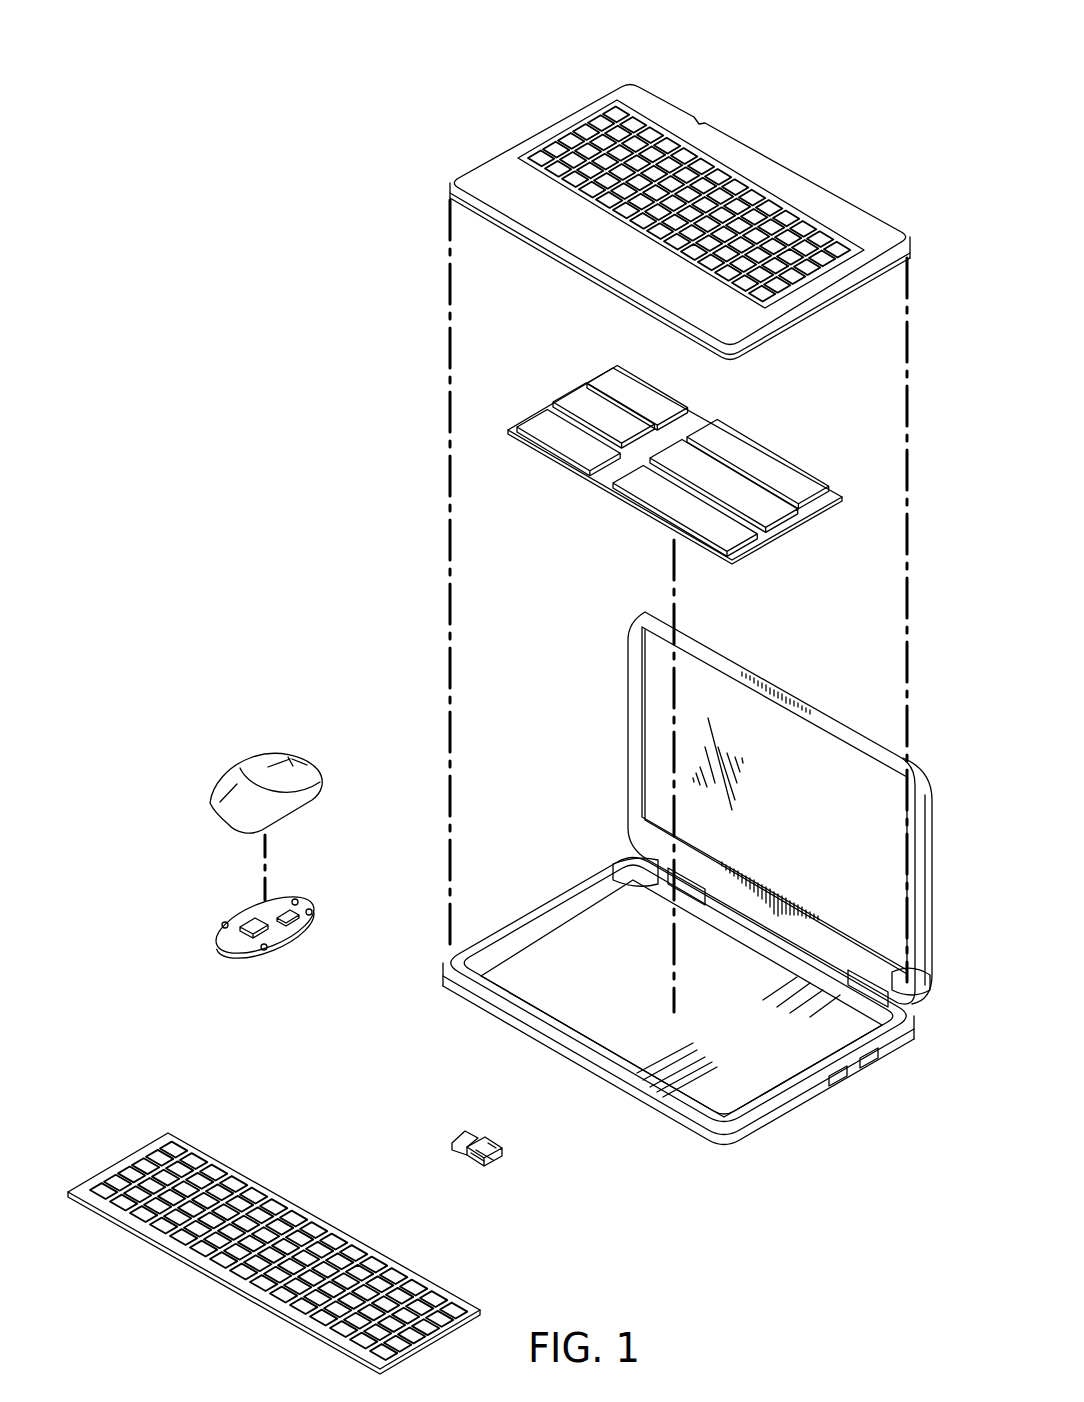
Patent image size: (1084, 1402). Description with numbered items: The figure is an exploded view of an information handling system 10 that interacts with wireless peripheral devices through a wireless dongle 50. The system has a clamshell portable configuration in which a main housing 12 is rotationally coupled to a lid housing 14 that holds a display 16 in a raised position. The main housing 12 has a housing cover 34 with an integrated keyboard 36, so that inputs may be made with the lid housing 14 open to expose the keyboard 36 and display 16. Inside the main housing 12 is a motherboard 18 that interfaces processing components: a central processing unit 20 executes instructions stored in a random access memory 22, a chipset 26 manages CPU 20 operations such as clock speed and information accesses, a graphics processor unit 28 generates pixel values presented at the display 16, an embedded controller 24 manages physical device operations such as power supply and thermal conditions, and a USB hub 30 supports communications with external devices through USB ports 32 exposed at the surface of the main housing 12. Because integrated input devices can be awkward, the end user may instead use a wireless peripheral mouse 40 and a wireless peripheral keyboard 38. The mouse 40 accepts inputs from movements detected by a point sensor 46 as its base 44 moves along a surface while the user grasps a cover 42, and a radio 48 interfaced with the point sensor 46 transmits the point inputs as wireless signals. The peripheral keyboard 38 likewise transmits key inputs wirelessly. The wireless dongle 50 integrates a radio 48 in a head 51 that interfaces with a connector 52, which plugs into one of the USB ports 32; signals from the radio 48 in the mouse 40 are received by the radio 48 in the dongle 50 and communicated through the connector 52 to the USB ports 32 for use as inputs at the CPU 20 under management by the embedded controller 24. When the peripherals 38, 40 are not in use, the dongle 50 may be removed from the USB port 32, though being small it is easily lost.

The information handling system 10 is at (330, 157).
The main housing 12 is at (766, 1140).
The lid housing 14 is at (822, 707).
The display 16 is at (840, 861).
The motherboard 18 is at (558, 463).
The central processing unit (CPU) 20 is at (626, 373).
The random access memory (RAM) 22 is at (572, 397).
The embedded controller 24 is at (530, 420).
The chipset 26 is at (818, 487).
The graphics processor unit (GPU) 28 is at (778, 516).
The Universal Serial Bus (USB) hub 30 is at (739, 540).
The USB ports 32 is at (865, 1077).
The housing cover 34 is at (810, 183).
The keyboard 36 is at (657, 120).
The peripheral keyboard 38 is at (187, 1268).
The peripheral mouse 40 is at (213, 768).
The cover 42 is at (210, 808).
The base 44 is at (212, 935).
The point sensor 46 is at (305, 928).
The radio 48 is at (245, 936).
The wireless dongle 50 is at (446, 1145).
The head 51 is at (503, 1155).
The connector 52 is at (462, 1130).